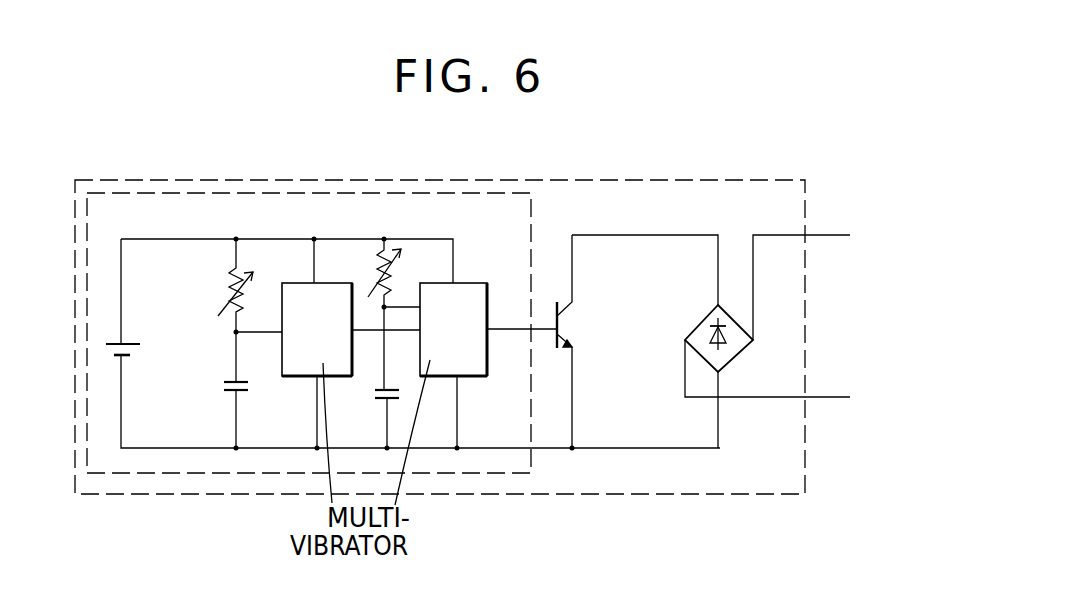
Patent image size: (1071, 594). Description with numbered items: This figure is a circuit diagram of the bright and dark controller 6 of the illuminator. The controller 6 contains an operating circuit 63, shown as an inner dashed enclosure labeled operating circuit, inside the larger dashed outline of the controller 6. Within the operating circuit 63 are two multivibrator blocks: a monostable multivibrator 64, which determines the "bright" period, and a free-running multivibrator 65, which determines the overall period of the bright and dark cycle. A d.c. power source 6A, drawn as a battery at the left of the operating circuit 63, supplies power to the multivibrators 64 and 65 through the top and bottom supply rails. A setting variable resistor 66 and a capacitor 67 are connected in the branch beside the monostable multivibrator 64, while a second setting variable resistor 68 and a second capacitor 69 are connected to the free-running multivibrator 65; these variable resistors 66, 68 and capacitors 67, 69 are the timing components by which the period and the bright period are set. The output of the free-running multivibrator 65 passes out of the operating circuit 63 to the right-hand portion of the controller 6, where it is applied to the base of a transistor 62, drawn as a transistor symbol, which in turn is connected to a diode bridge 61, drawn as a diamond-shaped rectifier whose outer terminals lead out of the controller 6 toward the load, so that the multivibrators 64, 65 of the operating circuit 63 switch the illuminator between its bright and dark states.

The controller 6 is at (457, 495).
The d.c. power source 6A is at (132, 347).
The rectifier bridge 61 is at (738, 355).
The transistor 62 is at (565, 320).
The operating circuit 63 is at (534, 204).
The monostable multivibrator 64 is at (296, 378).
The free-running multivibrator 65 is at (432, 378).
The setting variable resistor 66 is at (230, 288).
The capacitor 67 is at (224, 384).
The setting variable resistor 68 is at (382, 262).
The capacitor 69 is at (372, 393).